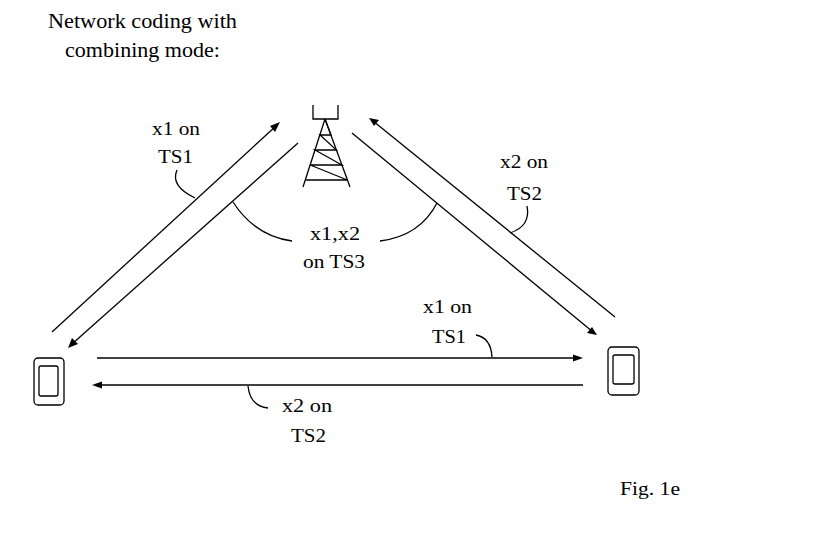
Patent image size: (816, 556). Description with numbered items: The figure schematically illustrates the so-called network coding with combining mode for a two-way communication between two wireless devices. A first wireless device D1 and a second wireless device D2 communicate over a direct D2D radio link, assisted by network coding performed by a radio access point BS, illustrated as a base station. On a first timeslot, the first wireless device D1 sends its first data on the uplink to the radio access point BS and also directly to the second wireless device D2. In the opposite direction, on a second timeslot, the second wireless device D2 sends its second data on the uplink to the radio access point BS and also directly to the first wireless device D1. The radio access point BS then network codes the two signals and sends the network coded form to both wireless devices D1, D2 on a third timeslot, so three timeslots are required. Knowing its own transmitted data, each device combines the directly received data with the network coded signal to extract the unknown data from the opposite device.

The radio access point BS is at (352, 95).
The first wireless device D1 is at (64, 392).
The second wireless device D2 is at (639, 382).